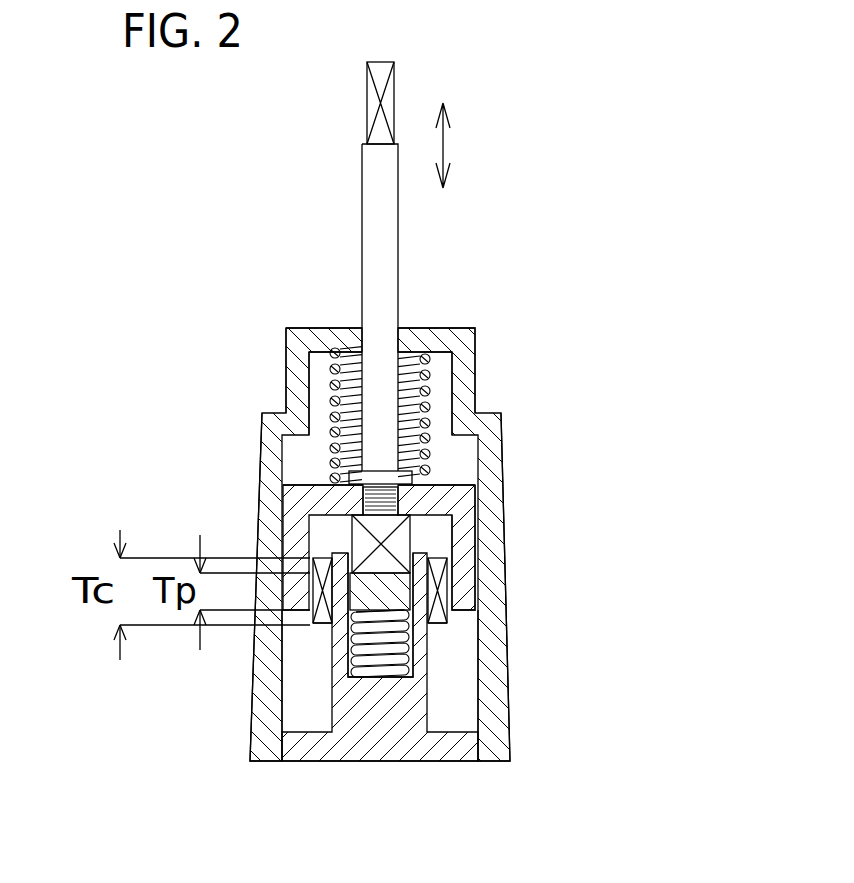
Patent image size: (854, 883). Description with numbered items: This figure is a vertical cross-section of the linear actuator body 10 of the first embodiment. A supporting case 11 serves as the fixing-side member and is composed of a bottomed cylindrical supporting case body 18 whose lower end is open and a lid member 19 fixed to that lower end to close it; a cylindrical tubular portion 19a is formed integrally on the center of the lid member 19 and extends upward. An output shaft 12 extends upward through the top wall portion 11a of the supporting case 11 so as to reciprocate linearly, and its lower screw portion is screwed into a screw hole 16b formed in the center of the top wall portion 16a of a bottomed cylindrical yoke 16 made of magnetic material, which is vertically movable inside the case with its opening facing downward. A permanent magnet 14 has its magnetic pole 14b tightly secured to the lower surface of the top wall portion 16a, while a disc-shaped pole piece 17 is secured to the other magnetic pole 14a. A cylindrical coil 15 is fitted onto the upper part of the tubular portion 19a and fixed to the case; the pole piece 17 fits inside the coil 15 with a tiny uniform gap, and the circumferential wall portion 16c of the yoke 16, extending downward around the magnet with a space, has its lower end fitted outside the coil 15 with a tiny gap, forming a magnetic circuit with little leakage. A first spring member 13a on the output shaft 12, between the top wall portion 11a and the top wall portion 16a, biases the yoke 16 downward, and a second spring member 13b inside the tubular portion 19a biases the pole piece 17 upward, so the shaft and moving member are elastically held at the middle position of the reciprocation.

The linear actuator body 10 is at (522, 222).
The supporting case 11 is at (258, 425).
The top wall portion of the supporting case 11a is at (438, 330).
The output shaft 12 is at (362, 178).
The first spring member 13a is at (428, 388).
The second spring member 13b is at (408, 668).
The permanent magnet 14 is at (400, 538).
The magnetic pole 14a is at (365, 640).
The other magnetic pole 14b is at (373, 520).
The coil 15 is at (440, 622).
The yoke 16 is at (292, 544).
The top wall portion of the yoke 16a is at (447, 495).
The screw hole 16b is at (388, 480).
The circumferential wall portion 16c is at (465, 552).
The pole piece 17 is at (440, 590).
The supporting case body 18 is at (265, 727).
The lid member 19 is at (327, 755).
The tubular portion 19a is at (422, 655).